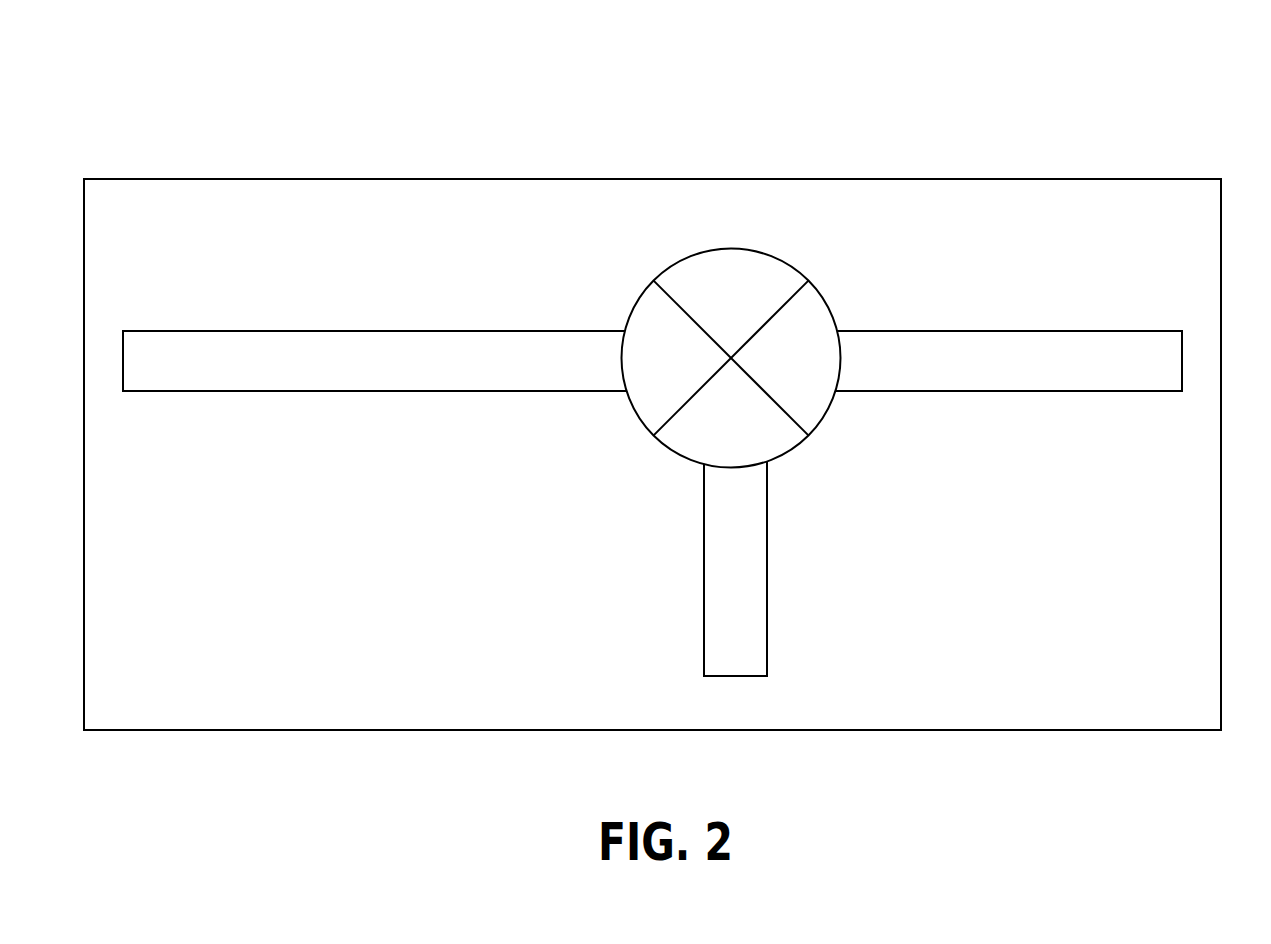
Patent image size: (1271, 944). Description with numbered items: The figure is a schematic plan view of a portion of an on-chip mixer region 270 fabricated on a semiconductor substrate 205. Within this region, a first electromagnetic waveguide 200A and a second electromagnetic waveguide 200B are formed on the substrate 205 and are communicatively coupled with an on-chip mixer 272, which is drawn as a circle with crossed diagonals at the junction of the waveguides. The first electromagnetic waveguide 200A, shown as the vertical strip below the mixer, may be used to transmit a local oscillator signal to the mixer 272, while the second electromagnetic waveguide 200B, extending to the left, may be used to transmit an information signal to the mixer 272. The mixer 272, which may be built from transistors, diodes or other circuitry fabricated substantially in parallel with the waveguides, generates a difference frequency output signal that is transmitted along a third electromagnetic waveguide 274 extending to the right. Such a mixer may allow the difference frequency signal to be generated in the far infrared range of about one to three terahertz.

The substrate 205 is at (1103, 697).
The on-chip mixer region 270 is at (968, 90).
The on-chip mixer 272 is at (795, 262).
The third electromagnetic waveguide 274 is at (1061, 382).
The first electromagnetic waveguide 200A is at (754, 639).
The second electromagnetic waveguide 200B is at (353, 382).